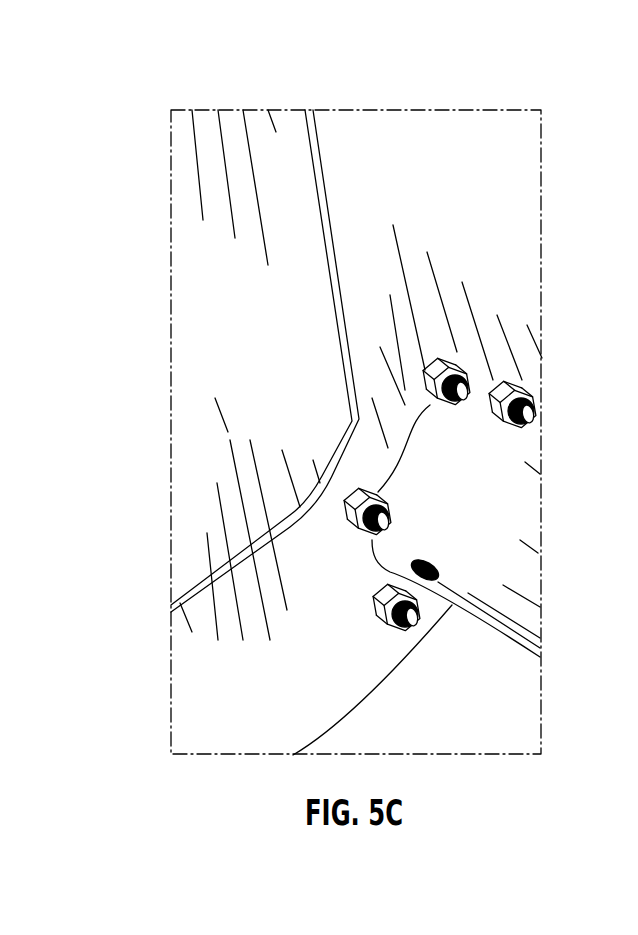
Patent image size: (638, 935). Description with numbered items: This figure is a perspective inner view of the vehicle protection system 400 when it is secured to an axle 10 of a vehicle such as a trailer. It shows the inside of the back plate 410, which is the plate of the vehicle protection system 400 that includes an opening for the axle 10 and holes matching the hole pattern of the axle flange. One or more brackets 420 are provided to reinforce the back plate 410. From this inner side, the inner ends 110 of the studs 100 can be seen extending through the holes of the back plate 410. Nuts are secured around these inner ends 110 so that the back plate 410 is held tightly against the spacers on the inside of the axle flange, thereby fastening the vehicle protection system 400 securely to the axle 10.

The vehicle protection system 400 is at (137, 56).
The back plate 410 is at (179, 332).
The bracket 420 is at (403, 127).
The stud 100 is at (450, 364).
The inner end 110 is at (350, 541).
The axle 10 is at (486, 614).